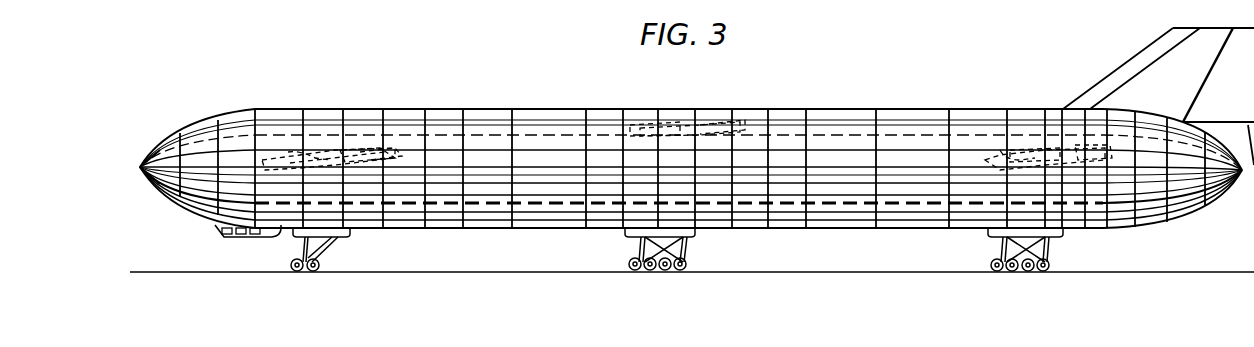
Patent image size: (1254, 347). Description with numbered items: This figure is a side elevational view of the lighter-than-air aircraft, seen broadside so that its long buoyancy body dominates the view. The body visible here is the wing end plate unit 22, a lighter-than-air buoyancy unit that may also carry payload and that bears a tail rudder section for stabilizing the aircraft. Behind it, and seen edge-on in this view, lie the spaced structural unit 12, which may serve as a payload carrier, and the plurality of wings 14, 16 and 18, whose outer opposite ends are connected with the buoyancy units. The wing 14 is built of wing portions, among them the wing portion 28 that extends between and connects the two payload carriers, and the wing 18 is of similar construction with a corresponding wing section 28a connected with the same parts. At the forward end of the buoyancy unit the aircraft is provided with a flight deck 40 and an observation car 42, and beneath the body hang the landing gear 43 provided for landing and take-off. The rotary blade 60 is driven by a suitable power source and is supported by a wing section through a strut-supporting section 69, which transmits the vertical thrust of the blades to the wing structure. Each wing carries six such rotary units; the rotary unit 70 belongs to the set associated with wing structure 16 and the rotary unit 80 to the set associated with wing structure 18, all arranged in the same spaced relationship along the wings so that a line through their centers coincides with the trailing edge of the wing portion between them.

The structural unit 12 is at (518, 142).
The wing 14 is at (282, 150).
The wing 16 is at (632, 130).
The wing 18 is at (978, 150).
The wing end plate unit 22 is at (572, 104).
The wing portion 28 is at (306, 142).
The wing section 28a is at (1012, 138).
The flight deck 40 is at (150, 185).
The observation car 42 is at (215, 233).
The landing gear 43 is at (305, 271).
The rotary blade 60 is at (392, 150).
The strut-supporting section 69 is at (345, 150).
The rotary unit 70 is at (748, 120).
The rotary unit 80 is at (1086, 135).